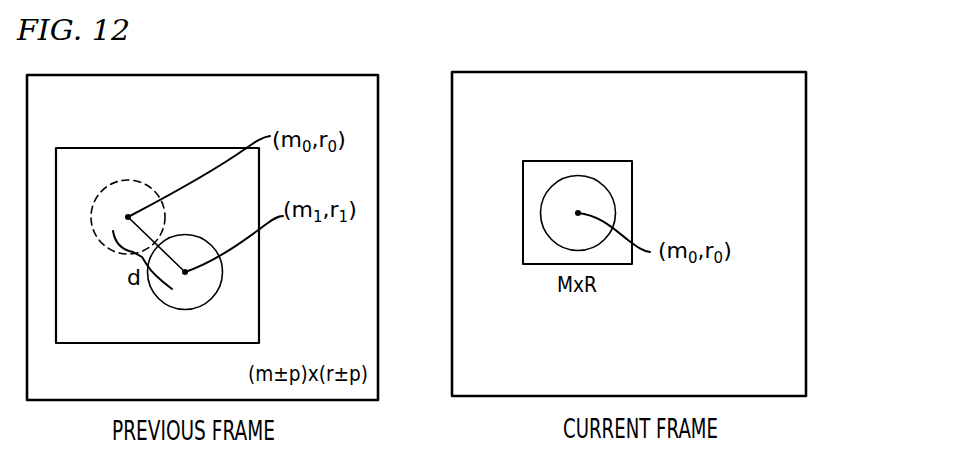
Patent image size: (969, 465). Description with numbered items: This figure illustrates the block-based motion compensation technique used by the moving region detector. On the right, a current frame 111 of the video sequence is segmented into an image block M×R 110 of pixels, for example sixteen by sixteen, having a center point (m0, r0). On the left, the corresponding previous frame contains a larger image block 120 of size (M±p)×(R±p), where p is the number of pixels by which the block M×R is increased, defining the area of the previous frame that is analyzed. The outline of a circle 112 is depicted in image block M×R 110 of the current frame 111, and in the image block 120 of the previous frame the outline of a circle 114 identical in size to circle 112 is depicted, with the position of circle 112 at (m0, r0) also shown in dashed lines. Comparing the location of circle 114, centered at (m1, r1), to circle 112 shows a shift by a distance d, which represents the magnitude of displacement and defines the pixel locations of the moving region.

The image block M×R 110 is at (540, 161).
The current frame 111 is at (806, 307).
The circle 112 is at (150, 185).
The circle 114 is at (168, 306).
The image block (M±p)×(R±p) 120 is at (259, 308).